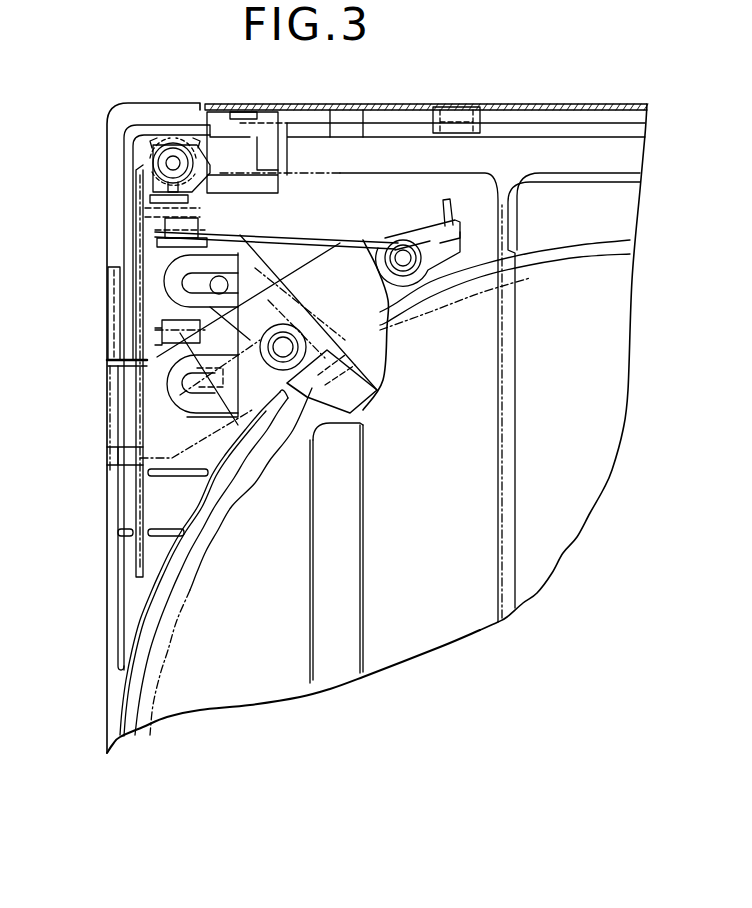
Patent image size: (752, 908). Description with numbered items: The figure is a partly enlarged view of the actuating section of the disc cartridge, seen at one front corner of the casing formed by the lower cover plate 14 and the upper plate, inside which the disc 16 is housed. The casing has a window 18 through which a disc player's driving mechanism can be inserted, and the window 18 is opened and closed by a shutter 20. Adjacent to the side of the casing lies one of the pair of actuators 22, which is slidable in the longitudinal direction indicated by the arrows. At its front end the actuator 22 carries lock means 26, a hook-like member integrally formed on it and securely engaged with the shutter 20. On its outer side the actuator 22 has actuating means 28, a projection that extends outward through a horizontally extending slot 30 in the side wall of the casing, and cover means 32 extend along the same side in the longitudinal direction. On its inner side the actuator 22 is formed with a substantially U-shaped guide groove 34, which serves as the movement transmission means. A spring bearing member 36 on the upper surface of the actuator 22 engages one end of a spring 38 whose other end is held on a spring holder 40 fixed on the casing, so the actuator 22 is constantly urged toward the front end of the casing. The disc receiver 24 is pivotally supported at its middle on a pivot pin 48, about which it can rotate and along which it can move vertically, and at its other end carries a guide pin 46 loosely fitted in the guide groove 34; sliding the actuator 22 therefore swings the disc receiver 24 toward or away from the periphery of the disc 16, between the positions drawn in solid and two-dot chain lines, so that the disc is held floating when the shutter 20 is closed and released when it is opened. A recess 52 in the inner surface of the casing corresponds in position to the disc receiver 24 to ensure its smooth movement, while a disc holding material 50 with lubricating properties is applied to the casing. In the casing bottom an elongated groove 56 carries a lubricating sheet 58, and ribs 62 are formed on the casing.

The lower cover plate 14 is at (107, 623).
The disc 16 is at (150, 707).
The window 18 is at (517, 397).
The shutter 20 is at (462, 110).
The actuator 22 is at (227, 117).
The disc receiver 24 is at (377, 400).
The lock means 26 is at (270, 117).
The actuating means 28 is at (113, 308).
The slot 30 is at (128, 417).
The cover means 32 is at (137, 173).
The guide groove 34 is at (153, 257).
The spring bearing member 36 is at (155, 222).
The spring 38 is at (341, 242).
The spring holder 40 is at (400, 240).
The guide pin 46 is at (229, 285).
The pivot pin 48 is at (307, 333).
The disc holding material 50 is at (367, 418).
The recess 52 is at (392, 367).
The elongated groove 56 is at (312, 622).
The sheet 58 is at (310, 537).
The rib 62 is at (98, 558).